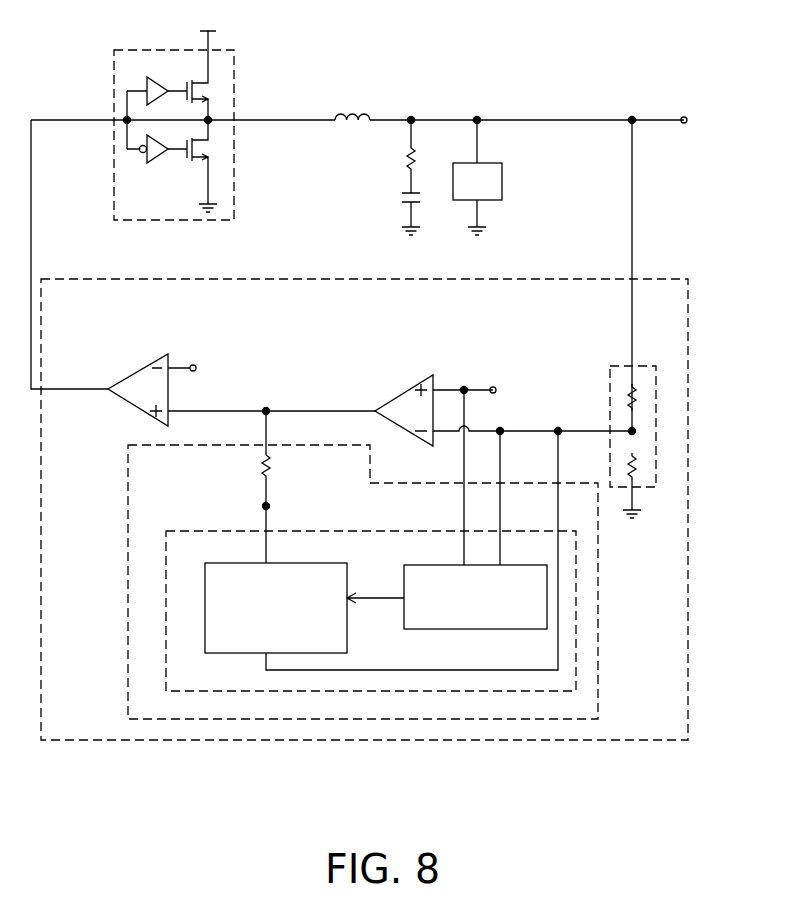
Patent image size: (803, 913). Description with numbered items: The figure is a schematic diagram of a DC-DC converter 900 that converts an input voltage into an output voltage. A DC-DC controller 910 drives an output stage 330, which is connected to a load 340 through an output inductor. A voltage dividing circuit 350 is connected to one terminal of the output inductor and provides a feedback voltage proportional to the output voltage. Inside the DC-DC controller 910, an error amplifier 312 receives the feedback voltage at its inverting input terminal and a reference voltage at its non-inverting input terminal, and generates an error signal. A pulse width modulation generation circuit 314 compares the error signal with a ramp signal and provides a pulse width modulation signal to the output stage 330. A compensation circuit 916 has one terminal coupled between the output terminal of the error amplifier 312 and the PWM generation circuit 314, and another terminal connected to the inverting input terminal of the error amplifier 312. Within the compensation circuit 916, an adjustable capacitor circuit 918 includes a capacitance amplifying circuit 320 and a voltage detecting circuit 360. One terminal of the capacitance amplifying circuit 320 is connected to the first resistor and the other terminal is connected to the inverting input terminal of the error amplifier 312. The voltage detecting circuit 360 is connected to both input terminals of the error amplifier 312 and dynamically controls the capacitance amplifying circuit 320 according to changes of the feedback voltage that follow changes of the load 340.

The output stage 330 is at (235, 72).
The load 340 is at (502, 178).
The DC-DC controller 910 is at (672, 280).
The voltage dividing circuit 350 is at (653, 366).
The pulse width modulation generation circuit 314 is at (138, 366).
The error amplifier 312 is at (410, 385).
The compensation circuit 916 is at (385, 481).
The adjustable capacitor circuit 918 is at (372, 529).
The capacitance amplifying circuit 320 is at (308, 563).
The voltage detecting circuit 360 is at (455, 629).
The DC-DC converter 900 is at (386, 402).